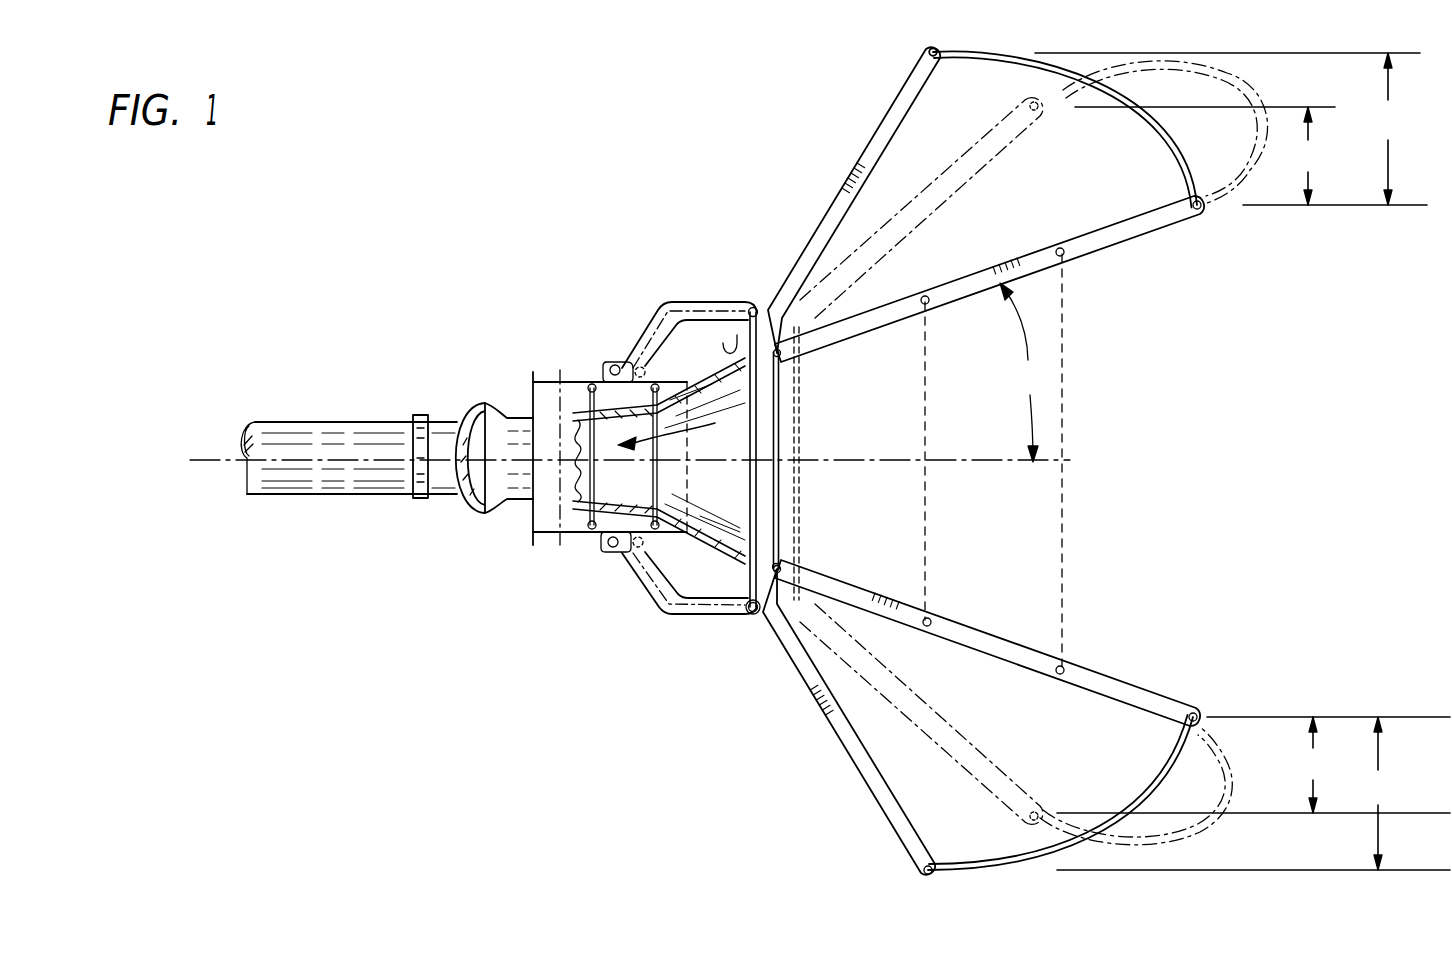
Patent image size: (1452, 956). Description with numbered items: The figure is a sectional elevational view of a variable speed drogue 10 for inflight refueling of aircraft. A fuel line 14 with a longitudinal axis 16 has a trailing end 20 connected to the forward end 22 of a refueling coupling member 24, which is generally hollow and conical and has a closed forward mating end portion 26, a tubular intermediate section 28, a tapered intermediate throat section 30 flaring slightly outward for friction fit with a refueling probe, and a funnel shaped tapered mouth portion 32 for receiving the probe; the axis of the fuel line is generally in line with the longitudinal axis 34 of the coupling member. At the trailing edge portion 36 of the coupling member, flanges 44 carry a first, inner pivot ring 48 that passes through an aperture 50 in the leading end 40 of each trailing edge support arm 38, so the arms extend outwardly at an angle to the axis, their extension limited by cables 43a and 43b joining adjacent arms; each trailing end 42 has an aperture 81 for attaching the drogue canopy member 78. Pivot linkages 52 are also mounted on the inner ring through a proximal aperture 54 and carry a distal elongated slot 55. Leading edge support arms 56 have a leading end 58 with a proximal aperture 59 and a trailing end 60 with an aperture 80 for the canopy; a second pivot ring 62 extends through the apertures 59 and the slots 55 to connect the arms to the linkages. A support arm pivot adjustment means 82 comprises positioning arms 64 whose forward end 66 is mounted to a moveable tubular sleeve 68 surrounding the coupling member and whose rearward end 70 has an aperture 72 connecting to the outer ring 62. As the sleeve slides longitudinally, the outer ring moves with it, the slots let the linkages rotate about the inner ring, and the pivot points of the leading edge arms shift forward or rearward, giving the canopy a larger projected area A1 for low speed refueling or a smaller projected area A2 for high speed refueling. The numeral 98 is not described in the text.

The variable speed drogue 10 is at (450, 712).
The fuel line 14 is at (355, 422).
The longitudinal axis 16 is at (232, 457).
The trailing end 20 is at (443, 497).
The forward end 22 is at (470, 413).
The refueling coupling member 24 is at (684, 429).
The closed forward mating end portion 26 is at (510, 438).
The tubular intermediate section 28 is at (520, 485).
The tapered intermediate throat section 30 is at (603, 368).
The tapered mouth portion 32 is at (757, 403).
The longitudinal axis 34 is at (945, 472).
The trailing edge portion 36 is at (790, 526).
The trailing edge support arms 38 is at (1123, 240).
The leading end 40 is at (863, 322).
The trailing end 42 is at (1188, 212).
The cable 43a is at (1064, 627).
The cable 43b is at (932, 578).
The flanges 44 is at (725, 330).
The first, inner pivot ring 48 is at (800, 474).
The aperture 50 is at (784, 362).
The pivot linkages 52 is at (768, 300).
The proximal aperture 54 is at (795, 570).
The distal elongated slot 55 is at (750, 304).
The leading edge support arms 56 is at (863, 135).
The leading end 58 is at (805, 220).
The proximal aperture 59 is at (757, 625).
The trailing end 60 is at (891, 92).
The second pivot ring 62 is at (750, 508).
The positioning arms 64 is at (652, 580).
The forward end 66 is at (633, 553).
The tubular sleeve 68 is at (552, 382).
The rearward end 70 is at (717, 617).
The aperture 72 is at (870, 273).
The drogue canopy member 78 is at (1198, 170).
The apertures 80 is at (927, 50).
The apertures 81 is at (1200, 212).
The support arm pivot adjustment means 82 is at (608, 250).
The bellows 98 is at (530, 518).
The larger projected area A1 is at (1242, 461).
The smaller projected area A2 is at (1253, 460).